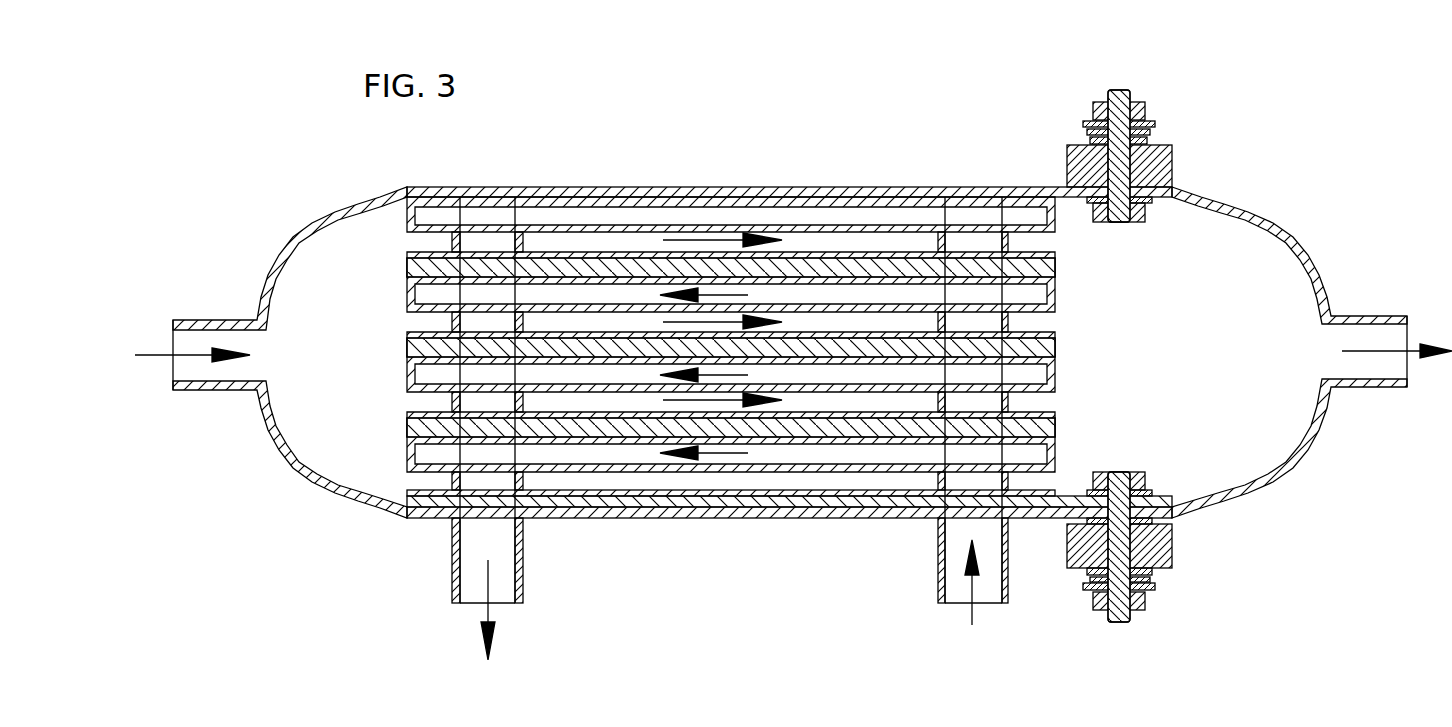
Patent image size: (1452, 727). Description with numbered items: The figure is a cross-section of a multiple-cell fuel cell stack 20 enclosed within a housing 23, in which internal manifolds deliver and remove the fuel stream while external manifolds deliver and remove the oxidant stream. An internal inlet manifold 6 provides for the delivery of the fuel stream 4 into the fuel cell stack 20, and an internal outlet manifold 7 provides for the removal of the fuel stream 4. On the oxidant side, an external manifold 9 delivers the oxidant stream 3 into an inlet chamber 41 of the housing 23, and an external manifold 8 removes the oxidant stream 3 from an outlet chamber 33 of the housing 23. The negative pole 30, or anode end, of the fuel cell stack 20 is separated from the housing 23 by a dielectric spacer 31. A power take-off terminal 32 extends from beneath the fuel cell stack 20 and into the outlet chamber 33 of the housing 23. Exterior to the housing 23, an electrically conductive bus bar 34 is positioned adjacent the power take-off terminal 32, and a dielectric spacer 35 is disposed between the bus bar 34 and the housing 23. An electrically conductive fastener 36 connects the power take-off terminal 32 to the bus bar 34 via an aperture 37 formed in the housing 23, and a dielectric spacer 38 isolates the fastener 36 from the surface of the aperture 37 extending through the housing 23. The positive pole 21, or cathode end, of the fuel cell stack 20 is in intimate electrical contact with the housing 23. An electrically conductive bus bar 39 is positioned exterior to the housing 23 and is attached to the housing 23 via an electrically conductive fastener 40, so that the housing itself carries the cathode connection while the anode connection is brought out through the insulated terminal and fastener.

The oxidant stream 3 is at (170, 362).
The fuel stream 4 is at (480, 631).
The internal inlet manifold 6 is at (938, 590).
The internal outlet manifold 7 is at (524, 588).
The external manifold 8 is at (1368, 315).
The external manifold 9 is at (207, 318).
The multiple-cell fuel cell stack 20 is at (400, 438).
The positive pole 21 is at (758, 137).
The housing 23 is at (323, 222).
The negative pole 30 is at (718, 578).
The dielectric spacer 31 is at (408, 503).
The power take-off terminal 32 is at (1160, 492).
The outlet chamber 33 is at (1170, 355).
The electrically conductive bus bar 34 is at (1175, 560).
The dielectric spacer 35 is at (1172, 520).
The electrically conductive fastener 36 is at (1130, 618).
The aperture 37 is at (1105, 513).
The dielectric spacer 38 is at (1106, 510).
The electrically conductive bus bar 39 is at (1172, 150).
The electrically conductive fastener 40 is at (1106, 96).
The inlet chamber 41 is at (330, 367).